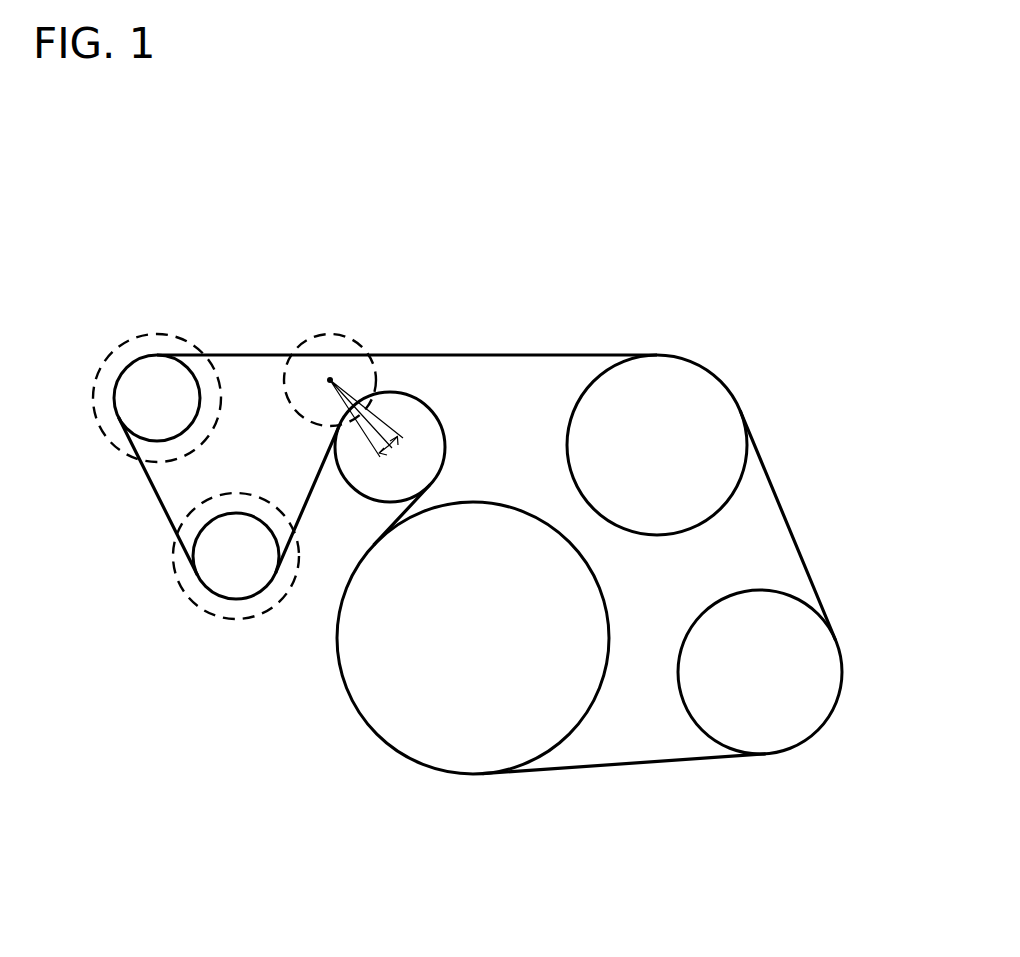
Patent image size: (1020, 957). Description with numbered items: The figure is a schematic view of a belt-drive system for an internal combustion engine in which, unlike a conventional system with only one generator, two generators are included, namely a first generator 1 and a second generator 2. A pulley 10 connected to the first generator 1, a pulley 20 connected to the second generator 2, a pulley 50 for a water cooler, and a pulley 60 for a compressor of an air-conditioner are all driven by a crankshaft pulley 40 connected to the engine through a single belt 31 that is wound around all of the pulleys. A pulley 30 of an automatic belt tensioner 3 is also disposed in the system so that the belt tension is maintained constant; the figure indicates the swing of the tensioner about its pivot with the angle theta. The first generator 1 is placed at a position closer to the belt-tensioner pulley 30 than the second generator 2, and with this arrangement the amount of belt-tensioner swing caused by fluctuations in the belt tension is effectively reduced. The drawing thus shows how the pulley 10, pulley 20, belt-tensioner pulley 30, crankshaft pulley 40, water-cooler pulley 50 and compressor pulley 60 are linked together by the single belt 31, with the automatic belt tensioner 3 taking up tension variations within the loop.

The first generator 1 is at (165, 567).
The second generator 2 is at (135, 324).
The automatic belt tensioner 3 is at (352, 330).
The pulley 10 is at (230, 582).
The pulley 20 is at (158, 370).
The belt-tensioner pulley 30 is at (417, 427).
The belt 31 is at (425, 356).
The crankshaft pulley 40 is at (375, 701).
The pulley for a water cooler 50 is at (668, 395).
The pulley for a compressor 60 is at (773, 725).